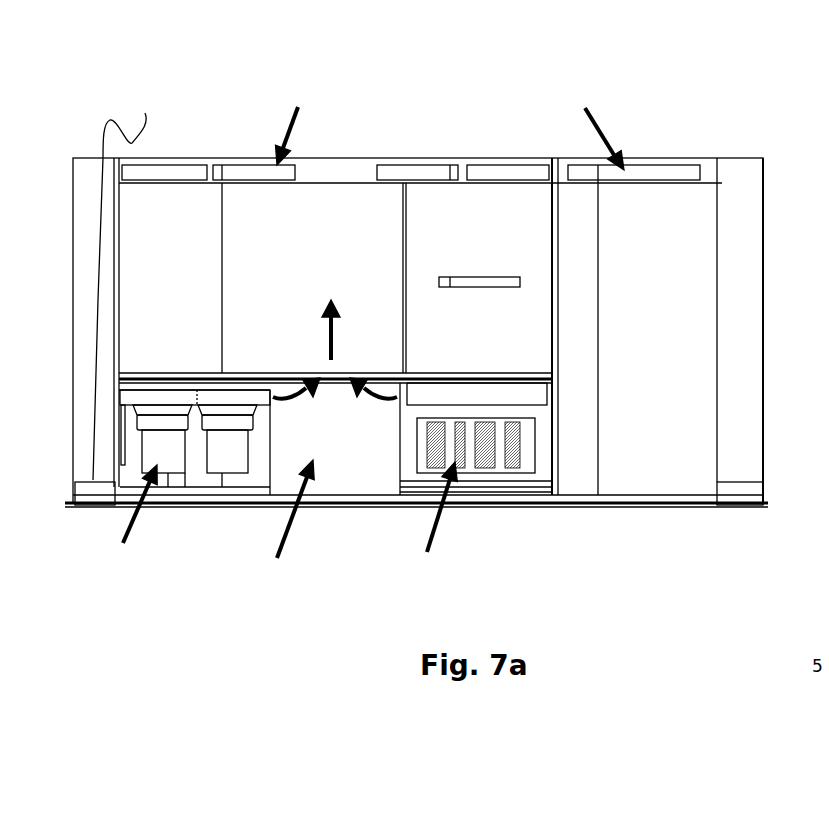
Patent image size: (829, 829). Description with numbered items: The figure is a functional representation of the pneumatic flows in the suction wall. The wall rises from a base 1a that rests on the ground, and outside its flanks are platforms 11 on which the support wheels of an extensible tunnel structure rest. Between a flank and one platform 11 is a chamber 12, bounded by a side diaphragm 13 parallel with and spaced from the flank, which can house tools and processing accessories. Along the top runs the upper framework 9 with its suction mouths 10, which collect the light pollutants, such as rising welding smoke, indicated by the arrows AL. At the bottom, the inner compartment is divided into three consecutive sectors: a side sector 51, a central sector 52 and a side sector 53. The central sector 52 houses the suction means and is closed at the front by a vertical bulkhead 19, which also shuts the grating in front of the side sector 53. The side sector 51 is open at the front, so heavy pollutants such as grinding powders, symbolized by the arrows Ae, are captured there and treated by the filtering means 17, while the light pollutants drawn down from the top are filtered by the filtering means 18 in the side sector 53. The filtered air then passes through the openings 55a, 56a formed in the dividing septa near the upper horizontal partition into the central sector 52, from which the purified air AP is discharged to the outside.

The base 1a is at (657, 505).
The platform 11 is at (740, 497).
The upper framework 9 is at (340, 163).
The suction mouth 10 is at (480, 170).
The chamber 12 is at (690, 215).
The side diaphragm 13 is at (722, 240).
The side sector 51 is at (203, 480).
The filtering means 17 is at (185, 445).
The central sector 52 is at (334, 470).
The vertical bulkhead 19 is at (410, 467).
The side sector 53 is at (525, 465).
The filtering means 18 is at (503, 440).
The opening 55a is at (270, 392).
The passage 56a is at (400, 383).
The purified air AP is at (308, 330).
The light pollutant flow AL is at (450, 125).
The heavy pollutant flow Ae is at (283, 523).